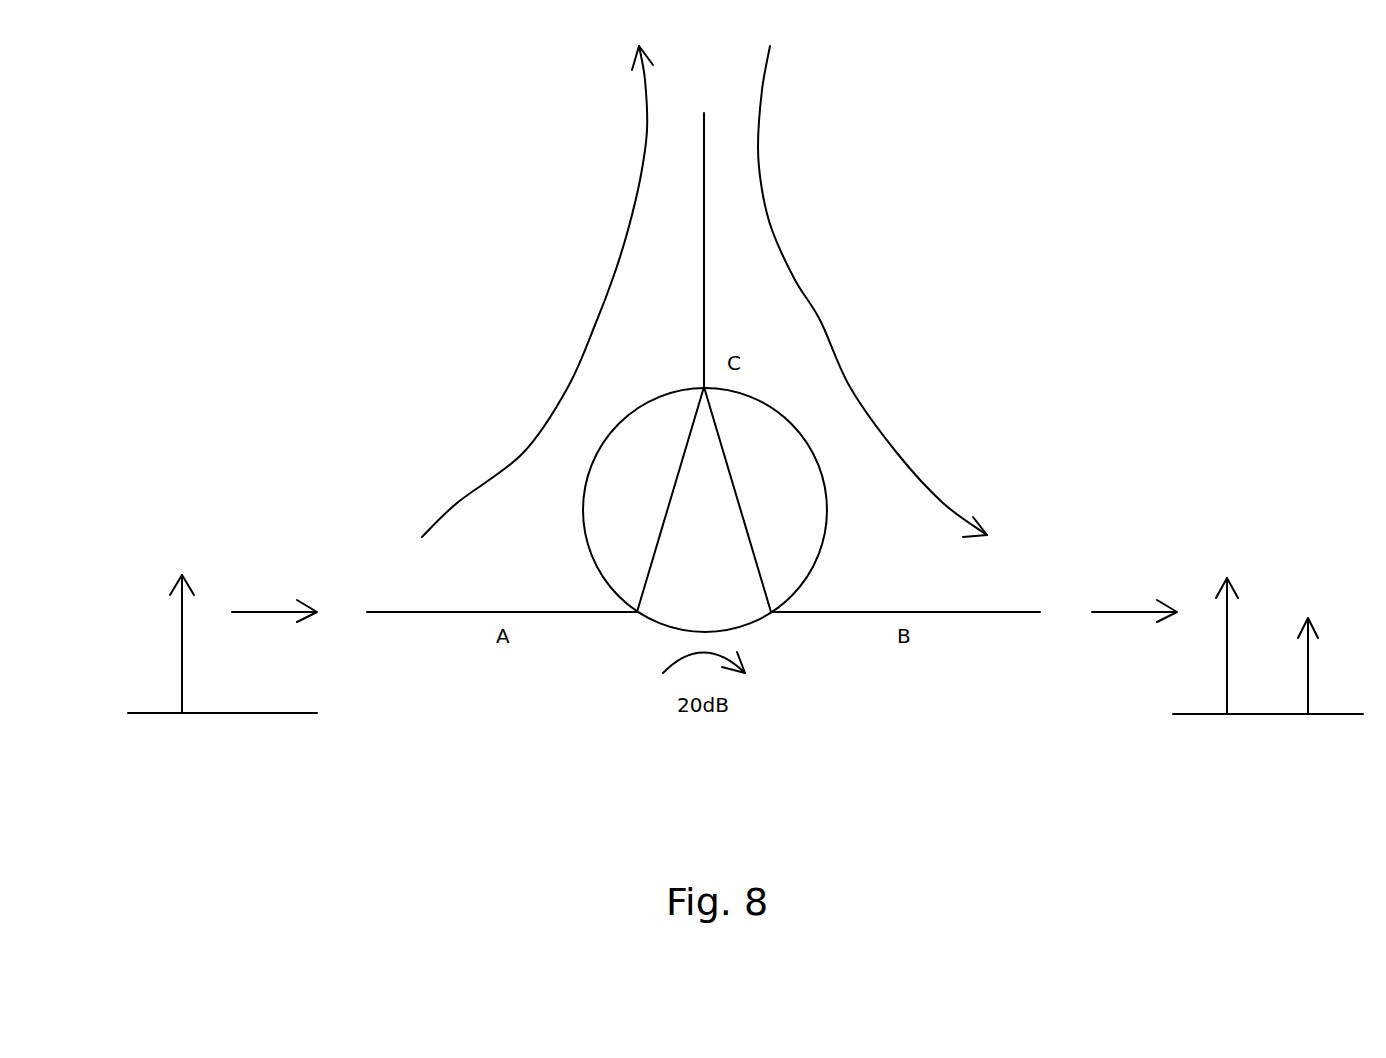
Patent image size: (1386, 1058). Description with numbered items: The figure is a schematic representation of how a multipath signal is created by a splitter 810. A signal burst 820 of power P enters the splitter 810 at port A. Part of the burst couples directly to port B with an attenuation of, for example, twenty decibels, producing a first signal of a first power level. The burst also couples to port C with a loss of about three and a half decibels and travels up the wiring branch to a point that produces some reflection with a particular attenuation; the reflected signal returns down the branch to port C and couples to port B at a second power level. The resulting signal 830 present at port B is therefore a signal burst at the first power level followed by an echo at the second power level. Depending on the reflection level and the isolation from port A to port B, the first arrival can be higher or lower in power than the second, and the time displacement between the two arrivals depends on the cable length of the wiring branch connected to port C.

The splitter 810 is at (825, 523).
The signal burst 820 is at (220, 713).
The resulting signal 830 is at (1267, 714).